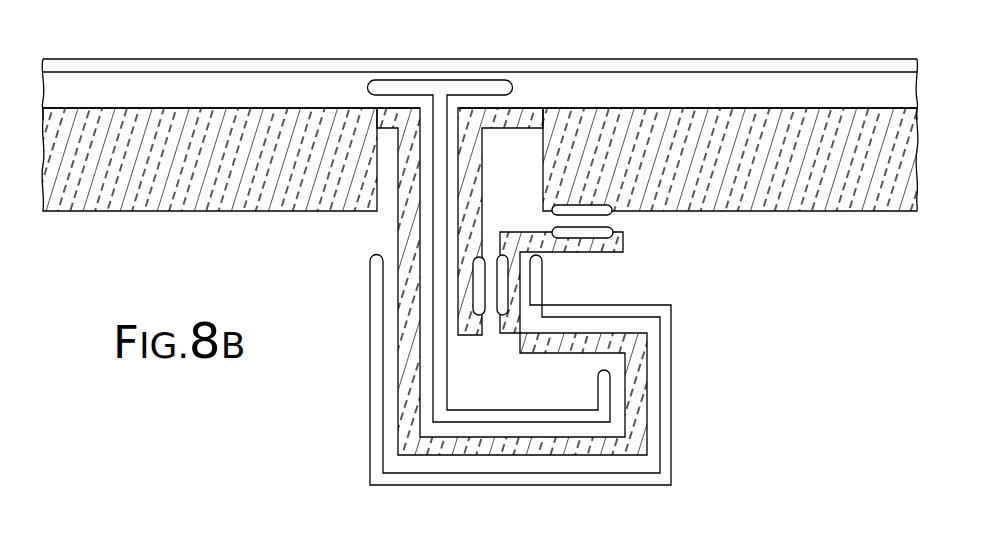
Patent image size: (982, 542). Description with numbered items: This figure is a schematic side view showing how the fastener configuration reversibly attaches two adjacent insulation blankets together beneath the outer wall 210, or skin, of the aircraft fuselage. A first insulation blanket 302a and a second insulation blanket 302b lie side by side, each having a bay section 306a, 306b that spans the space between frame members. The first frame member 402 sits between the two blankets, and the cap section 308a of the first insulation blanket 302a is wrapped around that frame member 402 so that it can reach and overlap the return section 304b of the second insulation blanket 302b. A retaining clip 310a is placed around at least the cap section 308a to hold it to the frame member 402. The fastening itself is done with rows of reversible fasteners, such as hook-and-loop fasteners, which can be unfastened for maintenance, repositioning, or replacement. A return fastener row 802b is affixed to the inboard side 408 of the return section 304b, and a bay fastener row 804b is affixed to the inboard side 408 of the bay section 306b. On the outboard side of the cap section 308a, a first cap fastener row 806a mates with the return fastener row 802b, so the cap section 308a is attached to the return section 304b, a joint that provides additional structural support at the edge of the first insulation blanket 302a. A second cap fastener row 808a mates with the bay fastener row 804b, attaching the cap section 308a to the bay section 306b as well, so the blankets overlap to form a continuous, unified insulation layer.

The outer wall 210 is at (615, 68).
The first insulation blanket 302a is at (209, 191).
The second insulation blanket 302b is at (730, 191).
The bay section of first insulation blanket 306a is at (100, 205).
The bay section of second insulation blanket 306b is at (816, 196).
The cap section of first insulation blanket 308a is at (400, 215).
The return section of second insulation blanket 304b is at (520, 108).
The inboard side 408 is at (511, 176).
The first frame member 402 is at (410, 85).
The retaining clip 310a is at (670, 392).
The return fastener row 802b is at (484, 316).
The bay fastener row 804b is at (550, 212).
The first cap fastener row 806a is at (501, 268).
The second cap fastener row 808a is at (613, 232).